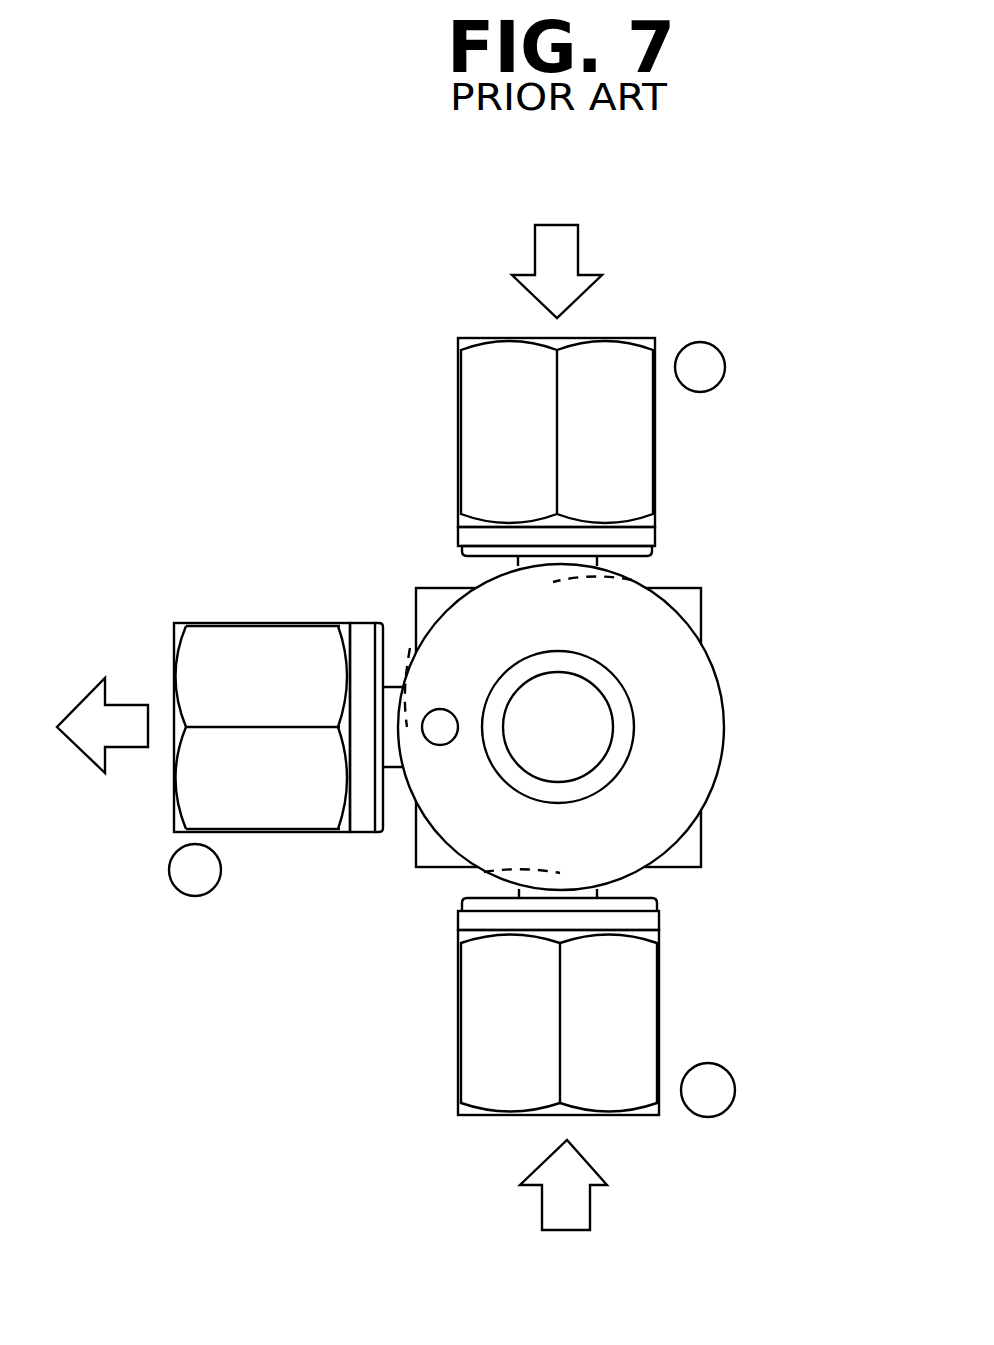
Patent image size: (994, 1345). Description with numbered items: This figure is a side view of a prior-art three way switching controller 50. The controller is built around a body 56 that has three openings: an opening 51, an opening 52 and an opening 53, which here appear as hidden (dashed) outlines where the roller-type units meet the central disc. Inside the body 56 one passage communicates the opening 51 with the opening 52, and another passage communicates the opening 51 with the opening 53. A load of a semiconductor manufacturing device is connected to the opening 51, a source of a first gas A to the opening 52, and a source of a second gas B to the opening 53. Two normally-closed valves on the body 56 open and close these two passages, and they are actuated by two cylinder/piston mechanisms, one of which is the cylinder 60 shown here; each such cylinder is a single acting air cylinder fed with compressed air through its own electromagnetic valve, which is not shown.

The three way switching controller 50 is at (248, 320).
The opening 51 is at (410, 648).
The opening 52 is at (632, 580).
The opening 53 is at (484, 872).
The body 56 is at (703, 872).
The cylinder/piston mechanism 60 is at (690, 736).